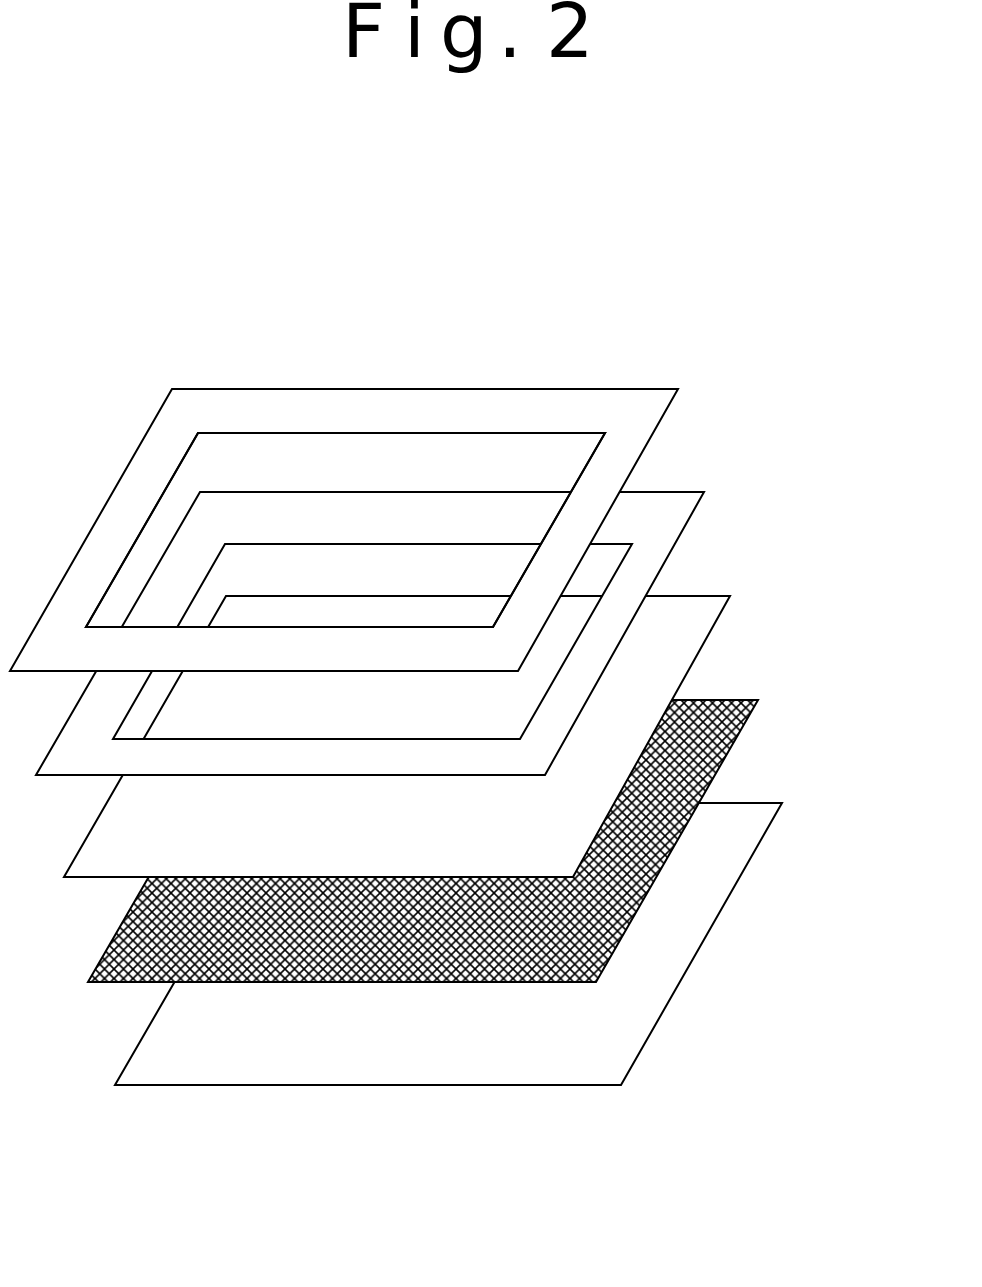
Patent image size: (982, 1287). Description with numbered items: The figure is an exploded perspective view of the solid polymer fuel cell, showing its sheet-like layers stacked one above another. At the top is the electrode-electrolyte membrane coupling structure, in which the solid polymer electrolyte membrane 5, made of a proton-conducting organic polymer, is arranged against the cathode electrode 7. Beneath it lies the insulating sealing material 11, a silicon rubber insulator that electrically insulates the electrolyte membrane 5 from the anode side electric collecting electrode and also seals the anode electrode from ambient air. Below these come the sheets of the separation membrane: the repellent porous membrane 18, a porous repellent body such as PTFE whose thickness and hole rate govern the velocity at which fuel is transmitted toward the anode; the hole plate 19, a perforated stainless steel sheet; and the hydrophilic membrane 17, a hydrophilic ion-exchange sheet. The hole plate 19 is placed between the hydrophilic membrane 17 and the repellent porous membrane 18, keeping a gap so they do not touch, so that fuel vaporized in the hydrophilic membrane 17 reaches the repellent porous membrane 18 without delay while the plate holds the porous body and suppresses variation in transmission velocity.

The solid polymer electrolyte membrane 5 is at (623, 412).
The cathode electrode 7 is at (471, 433).
The insulating sealing material 11 is at (680, 510).
The hydrophilic membrane 17 is at (760, 822).
The repellent porous membrane 18 is at (708, 614).
The hole plate 19 is at (733, 718).